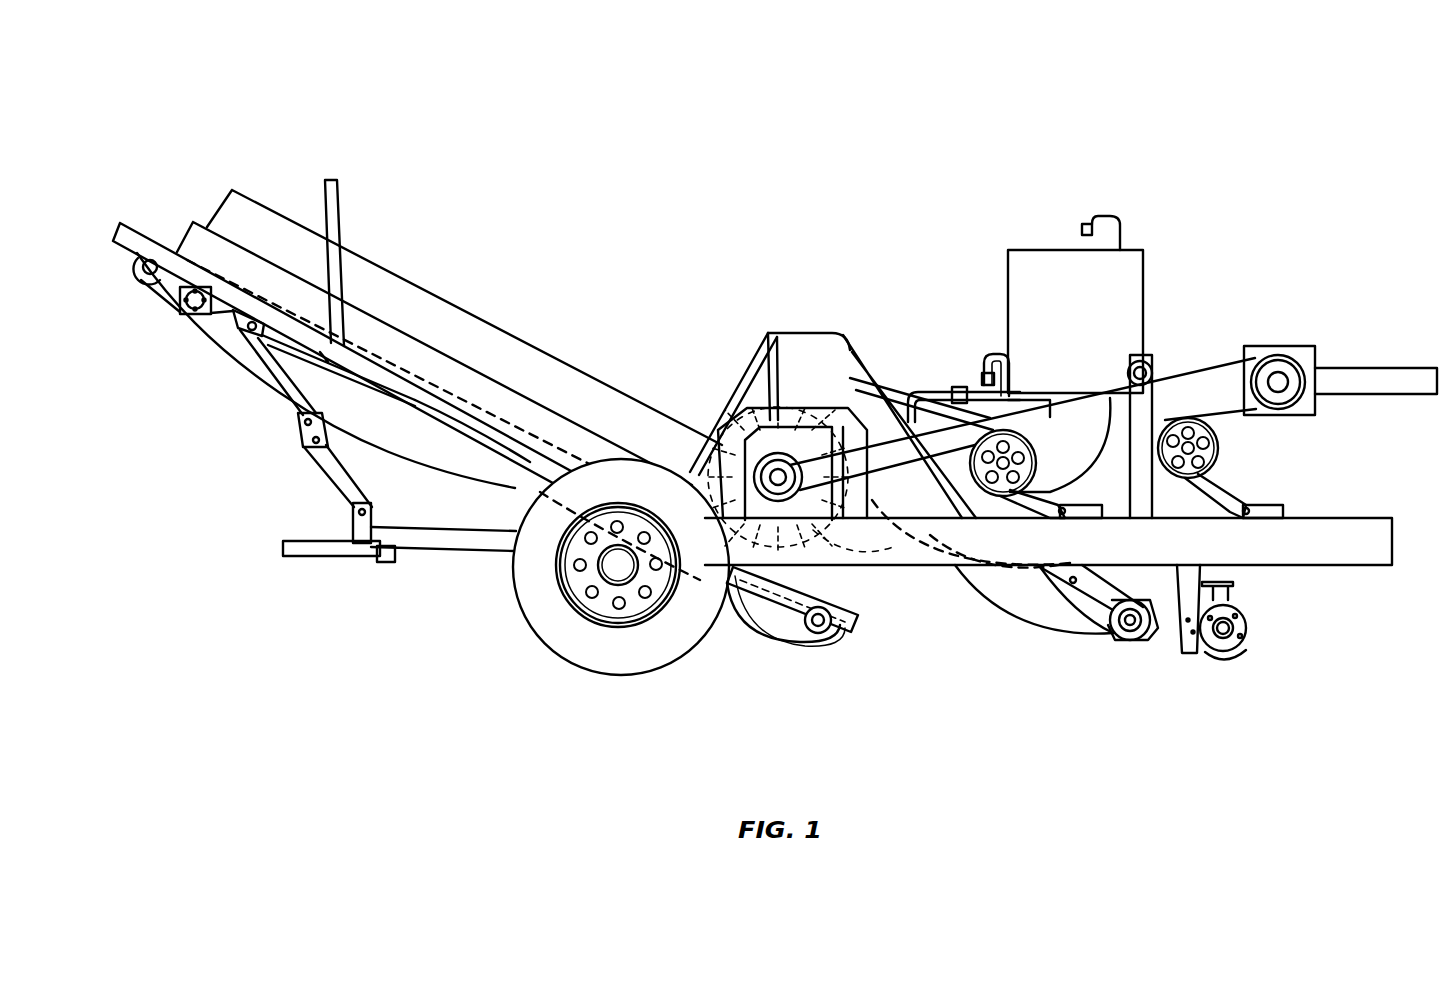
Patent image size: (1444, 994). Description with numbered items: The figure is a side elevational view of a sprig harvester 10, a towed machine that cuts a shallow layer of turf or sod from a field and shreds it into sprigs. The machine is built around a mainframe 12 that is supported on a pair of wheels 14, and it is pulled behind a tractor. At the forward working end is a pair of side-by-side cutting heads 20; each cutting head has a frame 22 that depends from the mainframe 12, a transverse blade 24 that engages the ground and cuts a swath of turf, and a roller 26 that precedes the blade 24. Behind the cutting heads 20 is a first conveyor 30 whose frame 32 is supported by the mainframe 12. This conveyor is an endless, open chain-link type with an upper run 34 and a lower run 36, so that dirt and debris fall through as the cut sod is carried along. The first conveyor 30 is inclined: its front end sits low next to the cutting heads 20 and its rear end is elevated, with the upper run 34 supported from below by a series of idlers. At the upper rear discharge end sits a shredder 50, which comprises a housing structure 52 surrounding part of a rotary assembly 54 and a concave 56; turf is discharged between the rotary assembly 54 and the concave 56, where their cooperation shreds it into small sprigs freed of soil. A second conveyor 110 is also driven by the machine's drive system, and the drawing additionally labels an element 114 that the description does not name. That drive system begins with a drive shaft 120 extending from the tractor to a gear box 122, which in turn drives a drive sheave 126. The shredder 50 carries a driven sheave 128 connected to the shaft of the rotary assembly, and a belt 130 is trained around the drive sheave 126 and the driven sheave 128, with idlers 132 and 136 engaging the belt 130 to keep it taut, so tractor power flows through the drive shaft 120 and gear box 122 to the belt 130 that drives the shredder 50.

The sprig harvester 10 is at (930, 126).
The mainframe 12 is at (932, 558).
The wheels 14 is at (640, 656).
The cutting head 20 is at (1260, 576).
The frame 22 is at (1197, 645).
The transverse blade 24 is at (1190, 602).
The roller 26 is at (1252, 627).
The first conveyor 30 is at (1040, 630).
The frame 32 is at (1103, 598).
The upper run 34 is at (1117, 587).
The lower run 36 is at (1003, 596).
The shredder 50 is at (752, 568).
The housing structure 52 is at (806, 340).
The rotary assembly 54 is at (750, 466).
The concave 56 is at (818, 545).
The conveyor 110 is at (432, 486).
The chute 114 is at (233, 360).
The drive shaft 120 is at (1377, 380).
The gear box 122 is at (1298, 352).
The drive sheave 126 is at (1290, 390).
The driven sheave 128 is at (800, 455).
The belt 130 is at (1217, 367).
The idler 132 is at (960, 388).
The idler 136 is at (1153, 367).